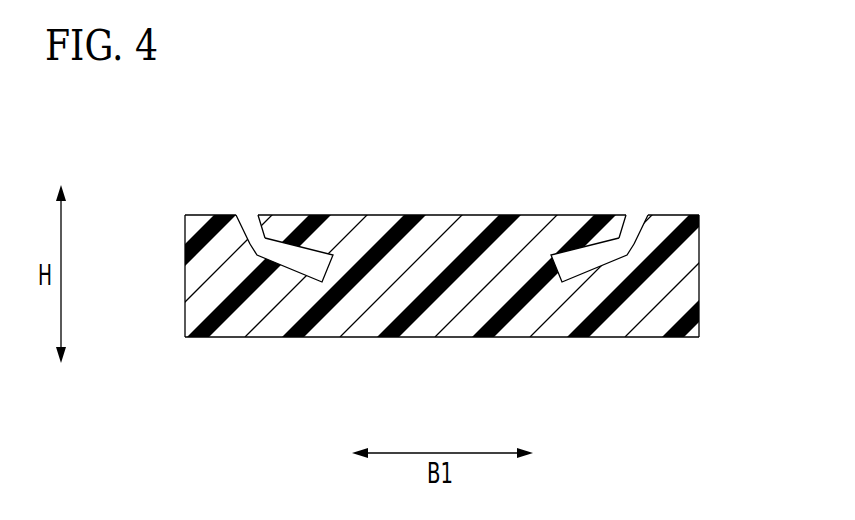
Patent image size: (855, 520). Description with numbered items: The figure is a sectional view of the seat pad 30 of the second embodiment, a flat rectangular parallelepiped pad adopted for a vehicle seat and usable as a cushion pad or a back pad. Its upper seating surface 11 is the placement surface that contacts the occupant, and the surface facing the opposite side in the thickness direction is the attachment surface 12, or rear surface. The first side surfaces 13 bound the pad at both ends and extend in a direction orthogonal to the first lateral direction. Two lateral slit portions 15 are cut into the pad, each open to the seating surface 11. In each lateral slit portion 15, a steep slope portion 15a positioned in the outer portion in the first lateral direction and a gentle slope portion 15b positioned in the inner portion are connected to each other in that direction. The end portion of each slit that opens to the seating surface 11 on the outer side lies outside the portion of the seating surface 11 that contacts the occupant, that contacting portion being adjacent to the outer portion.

The seat pad 30 is at (718, 117).
The seating surface 11 is at (432, 214).
The attachment surface 12 is at (443, 337).
The first side surfaces 13 is at (185, 299).
The lateral slit portions 15 is at (439, 185).
The steep slope portion 15a is at (252, 228).
The gentle slope portion 15b is at (290, 255).